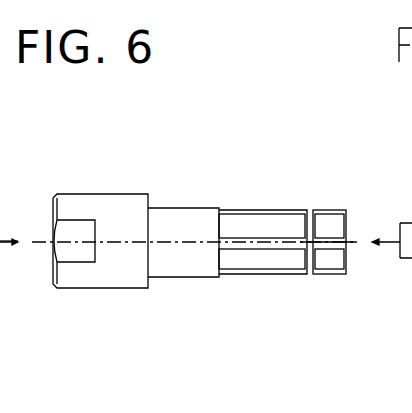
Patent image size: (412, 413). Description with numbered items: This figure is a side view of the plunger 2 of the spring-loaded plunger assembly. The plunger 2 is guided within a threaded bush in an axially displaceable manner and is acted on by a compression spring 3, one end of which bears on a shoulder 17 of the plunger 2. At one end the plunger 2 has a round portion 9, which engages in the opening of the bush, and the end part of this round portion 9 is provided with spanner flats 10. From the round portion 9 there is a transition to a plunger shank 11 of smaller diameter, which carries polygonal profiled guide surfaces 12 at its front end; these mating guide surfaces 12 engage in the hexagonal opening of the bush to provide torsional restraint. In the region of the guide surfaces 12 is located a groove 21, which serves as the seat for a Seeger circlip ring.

The plunger 2 is at (190, 213).
The compression spring 3 is at (10, 157).
The round portion 9 is at (92, 277).
The spanner flats 10 is at (73, 230).
The plunger shank 11 is at (180, 262).
The guide surfaces 12 is at (246, 260).
The shoulder 17 is at (148, 204).
The groove 21 is at (308, 262).